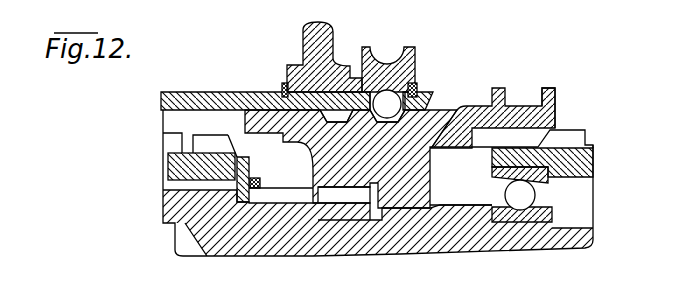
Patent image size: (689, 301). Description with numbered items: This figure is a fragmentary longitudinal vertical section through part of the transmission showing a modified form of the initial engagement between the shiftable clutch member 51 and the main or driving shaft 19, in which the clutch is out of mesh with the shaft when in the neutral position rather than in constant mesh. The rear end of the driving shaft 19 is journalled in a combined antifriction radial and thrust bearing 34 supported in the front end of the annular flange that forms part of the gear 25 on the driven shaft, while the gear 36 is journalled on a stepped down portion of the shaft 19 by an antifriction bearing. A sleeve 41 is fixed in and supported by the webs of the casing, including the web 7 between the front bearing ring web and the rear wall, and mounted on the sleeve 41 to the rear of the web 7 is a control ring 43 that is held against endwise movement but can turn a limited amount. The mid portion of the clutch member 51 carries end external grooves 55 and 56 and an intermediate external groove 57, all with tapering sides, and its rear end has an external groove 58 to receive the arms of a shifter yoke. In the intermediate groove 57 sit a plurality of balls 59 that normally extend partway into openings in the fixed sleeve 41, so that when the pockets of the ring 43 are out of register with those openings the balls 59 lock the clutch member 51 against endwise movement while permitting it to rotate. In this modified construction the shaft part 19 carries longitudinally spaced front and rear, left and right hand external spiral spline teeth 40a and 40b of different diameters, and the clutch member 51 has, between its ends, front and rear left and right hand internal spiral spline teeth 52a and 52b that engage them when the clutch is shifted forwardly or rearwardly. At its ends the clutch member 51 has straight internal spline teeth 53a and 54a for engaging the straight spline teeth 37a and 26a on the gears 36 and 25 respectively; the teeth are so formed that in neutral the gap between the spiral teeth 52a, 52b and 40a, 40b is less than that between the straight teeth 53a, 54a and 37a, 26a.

The web 7 is at (320, 26).
The main or driving shaft 19 is at (163, 209).
The gear 25 is at (596, 162).
The straight spline teeth 26a is at (581, 130).
The combined antifriction radial and thrust bearing 34 is at (533, 197).
The gear 36 is at (163, 168).
The straight spline teeth 37a is at (214, 143).
The front left hand external spiral spline teeth 40a is at (290, 185).
The rear right hand external spiral spline teeth 40b is at (470, 207).
The sleeve 41 is at (257, 94).
The control ring 43 is at (416, 66).
The shiftable clutch member 51 is at (351, 159).
The front left hand internal spiral spline teeth 52a is at (329, 204).
The rear right hand internal spiral spline teeth 52b is at (397, 214).
The straight internal spline teeth 53a is at (253, 153).
The straight internal spline teeth 54a is at (485, 144).
The end external groove 55 is at (342, 117).
The end external groove 56 is at (455, 112).
The intermediate external groove 57 is at (386, 91).
The external groove 58 is at (528, 106).
The balls 59 is at (417, 88).